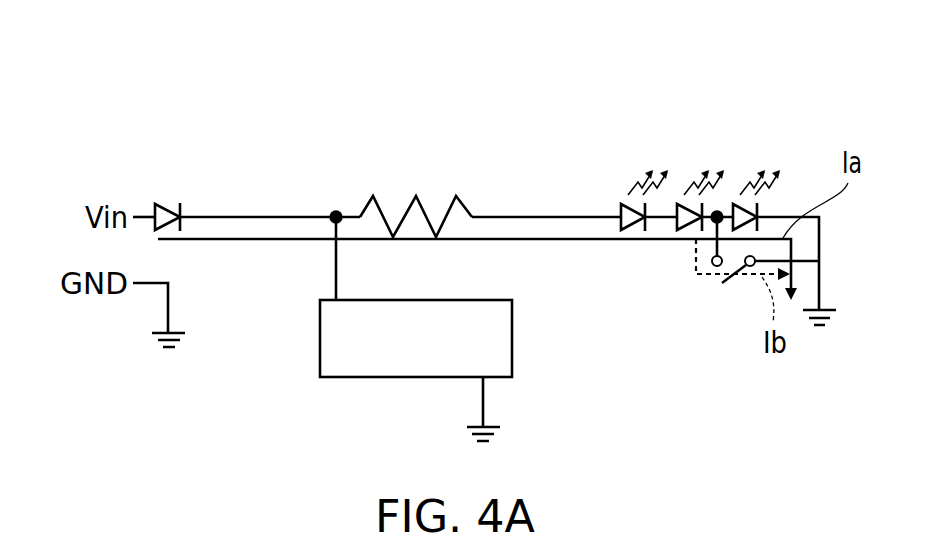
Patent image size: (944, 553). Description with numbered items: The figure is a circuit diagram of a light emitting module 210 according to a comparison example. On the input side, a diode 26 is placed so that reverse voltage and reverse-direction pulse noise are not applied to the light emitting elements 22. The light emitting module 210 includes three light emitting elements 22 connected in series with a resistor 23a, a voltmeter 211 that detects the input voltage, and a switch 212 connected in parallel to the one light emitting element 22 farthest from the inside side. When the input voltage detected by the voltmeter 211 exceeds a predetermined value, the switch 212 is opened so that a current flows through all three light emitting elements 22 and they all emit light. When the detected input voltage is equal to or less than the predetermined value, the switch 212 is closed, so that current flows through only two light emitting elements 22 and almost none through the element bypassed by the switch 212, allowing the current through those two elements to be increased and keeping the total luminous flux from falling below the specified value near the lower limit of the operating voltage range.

The diode 26 is at (167, 203).
The resistor 23a is at (400, 210).
The light emitting element 22 is at (636, 233).
The switch 212 is at (711, 296).
The voltmeter 211 is at (385, 355).
The light emitting module 210 is at (802, 135).